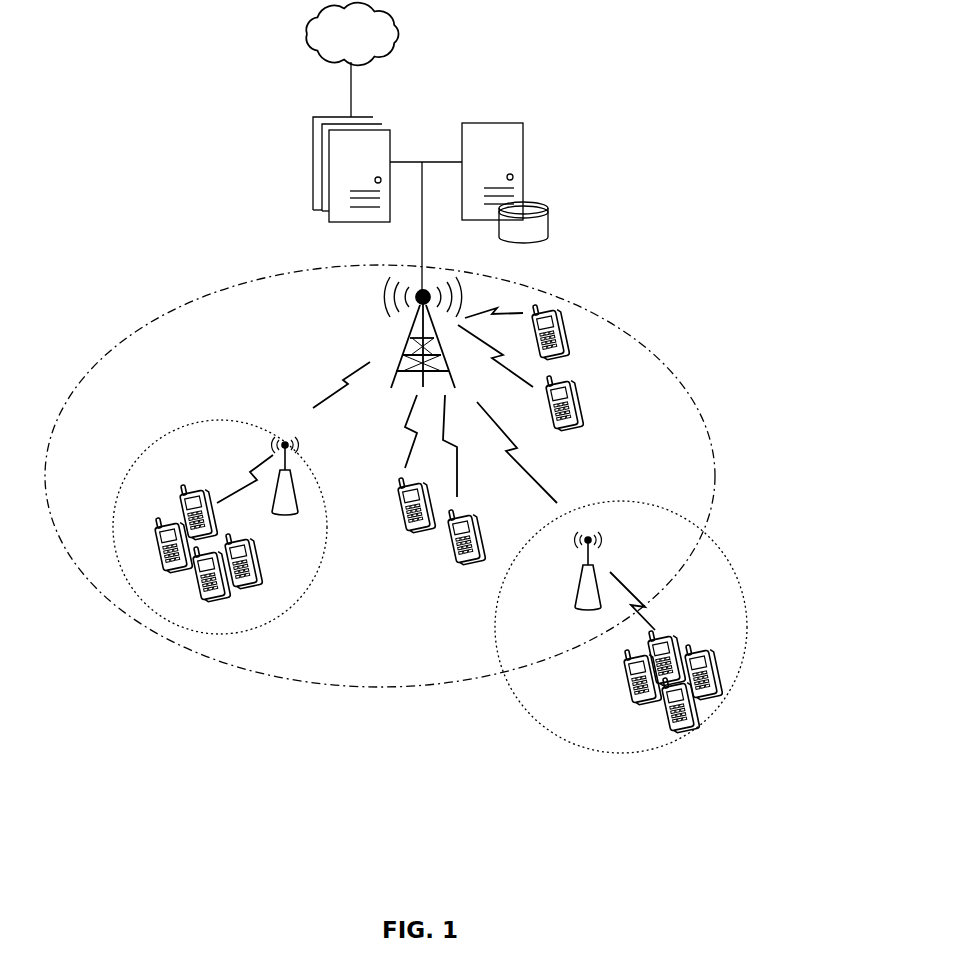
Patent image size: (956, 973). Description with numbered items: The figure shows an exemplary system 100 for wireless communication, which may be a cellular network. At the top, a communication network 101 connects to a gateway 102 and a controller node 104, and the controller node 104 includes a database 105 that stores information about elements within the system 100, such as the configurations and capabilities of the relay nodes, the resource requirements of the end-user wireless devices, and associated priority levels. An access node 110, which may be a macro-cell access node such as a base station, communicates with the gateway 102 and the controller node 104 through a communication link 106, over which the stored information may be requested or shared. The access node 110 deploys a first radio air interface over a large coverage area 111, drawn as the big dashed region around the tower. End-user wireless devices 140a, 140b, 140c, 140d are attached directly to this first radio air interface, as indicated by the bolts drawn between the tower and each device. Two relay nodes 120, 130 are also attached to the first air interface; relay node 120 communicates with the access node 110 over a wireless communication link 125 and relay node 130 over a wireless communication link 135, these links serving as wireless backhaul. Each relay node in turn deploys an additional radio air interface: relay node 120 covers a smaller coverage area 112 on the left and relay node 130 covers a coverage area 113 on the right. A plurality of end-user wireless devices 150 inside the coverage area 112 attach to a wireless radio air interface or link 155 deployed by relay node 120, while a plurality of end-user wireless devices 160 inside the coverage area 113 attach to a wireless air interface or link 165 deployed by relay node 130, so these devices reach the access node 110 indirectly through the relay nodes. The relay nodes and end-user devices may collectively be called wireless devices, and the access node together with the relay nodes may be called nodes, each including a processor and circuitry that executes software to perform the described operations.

The system 100 is at (455, 62).
The communication network 101 is at (369, 42).
The gateway 102 is at (317, 118).
The controller node 104 is at (523, 123).
The database 105 is at (547, 205).
The communication link 106 is at (422, 238).
The access node 110 is at (410, 343).
The coverage area 111 is at (380, 507).
The coverage area 112 is at (128, 467).
The coverage area 113 is at (743, 672).
The relay node 120 is at (295, 480).
The wireless communication link 125 is at (337, 378).
The relay node 130 is at (598, 565).
The wireless communication link 135 is at (528, 467).
The end-user wireless device 140a is at (557, 313).
The end-user wireless device 140b is at (572, 387).
The end-user wireless device 140c is at (373, 532).
The end-user wireless device 140d is at (428, 561).
The end-user wireless devices 150 is at (263, 594).
The wireless radio air interface or link 155 is at (250, 470).
The end-user wireless devices 160 is at (622, 720).
The wireless air interface or link 165 is at (650, 620).